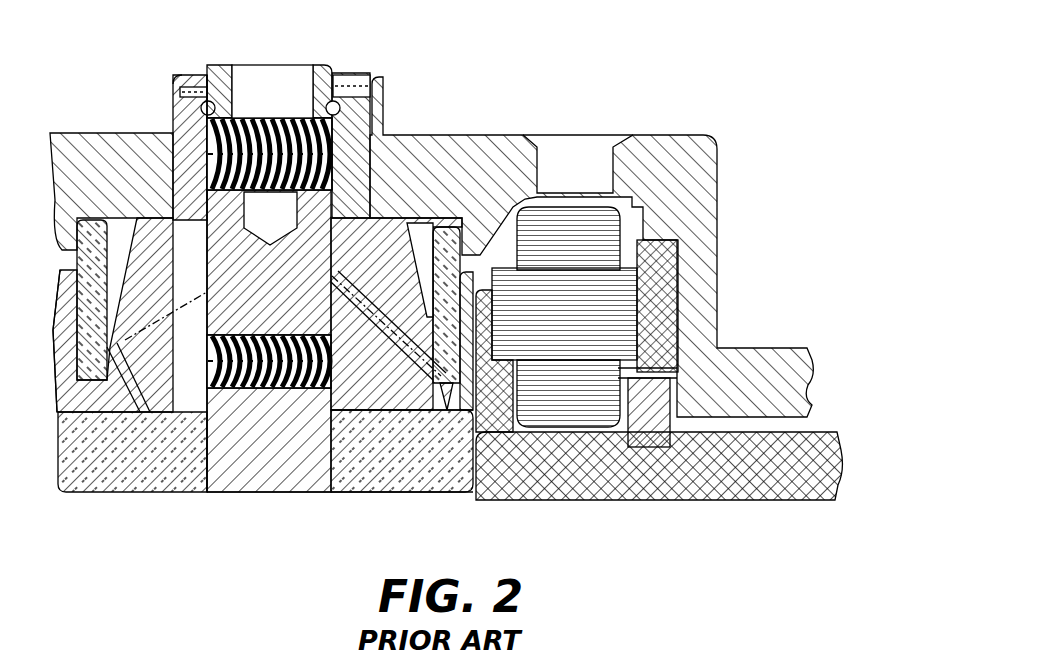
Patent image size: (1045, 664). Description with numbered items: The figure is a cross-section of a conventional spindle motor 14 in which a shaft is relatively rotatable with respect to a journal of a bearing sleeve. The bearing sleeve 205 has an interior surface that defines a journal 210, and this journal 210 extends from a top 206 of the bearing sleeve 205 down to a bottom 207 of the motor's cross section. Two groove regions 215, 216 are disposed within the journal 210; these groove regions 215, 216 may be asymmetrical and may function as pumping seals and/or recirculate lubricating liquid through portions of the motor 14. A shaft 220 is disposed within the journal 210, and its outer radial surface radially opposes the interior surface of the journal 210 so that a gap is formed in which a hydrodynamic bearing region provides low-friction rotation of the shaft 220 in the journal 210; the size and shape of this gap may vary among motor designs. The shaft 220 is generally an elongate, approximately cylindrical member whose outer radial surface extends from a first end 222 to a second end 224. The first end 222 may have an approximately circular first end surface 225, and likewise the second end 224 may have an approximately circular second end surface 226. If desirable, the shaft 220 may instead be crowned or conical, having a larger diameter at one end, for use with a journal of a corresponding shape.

The spindle motor 14 is at (705, 125).
The bearing sleeve 205 is at (142, 412).
The top 206 is at (190, 117).
The bottom 207 is at (207, 492).
The journal 210 is at (197, 412).
The groove region 215 is at (257, 117).
The groove region 216 is at (283, 390).
The shaft 220 is at (253, 457).
The first end 222 is at (333, 65).
The second end 224 is at (325, 485).
The first end surface 225 is at (282, 65).
The second end surface 226 is at (320, 482).